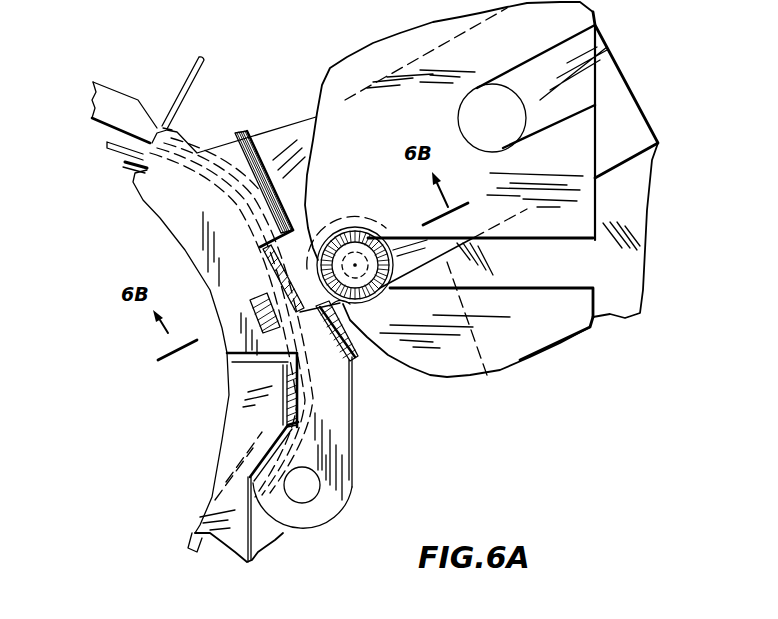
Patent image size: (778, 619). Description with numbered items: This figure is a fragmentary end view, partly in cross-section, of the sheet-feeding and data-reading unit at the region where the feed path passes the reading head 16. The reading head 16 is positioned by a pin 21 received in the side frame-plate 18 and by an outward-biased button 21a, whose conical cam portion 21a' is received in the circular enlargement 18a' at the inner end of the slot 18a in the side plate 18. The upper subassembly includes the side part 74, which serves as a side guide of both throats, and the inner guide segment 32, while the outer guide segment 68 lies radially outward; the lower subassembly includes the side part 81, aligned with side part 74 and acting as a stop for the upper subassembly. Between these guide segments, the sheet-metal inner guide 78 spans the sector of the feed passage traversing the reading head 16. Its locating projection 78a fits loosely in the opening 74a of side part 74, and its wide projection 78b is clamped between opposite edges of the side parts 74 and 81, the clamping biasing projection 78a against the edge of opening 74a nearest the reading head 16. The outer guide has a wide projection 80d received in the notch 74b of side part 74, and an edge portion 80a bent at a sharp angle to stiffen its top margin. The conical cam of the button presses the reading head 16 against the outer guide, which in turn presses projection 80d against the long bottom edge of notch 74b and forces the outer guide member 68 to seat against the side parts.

The reading head 16 is at (642, 90).
The side frame-plate 18 is at (340, 110).
The pin 21 is at (472, 120).
The button 21a is at (366, 252).
The conical cam portion 21a' is at (466, 248).
The slot 18a is at (480, 210).
The circular enlargement 18a' is at (473, 303).
The wide projection 80d is at (324, 218).
The edge portion 80a is at (205, 67).
The outer guide segment 68 is at (116, 100).
The inner guide segment 32 is at (110, 145).
The inner guide 78 is at (125, 162).
The side part 74 is at (150, 185).
The opening 74a is at (247, 323).
The notch 74b is at (305, 197).
The locating projection 78a is at (257, 313).
The wide projection 78b is at (297, 400).
The side part 81 is at (232, 452).